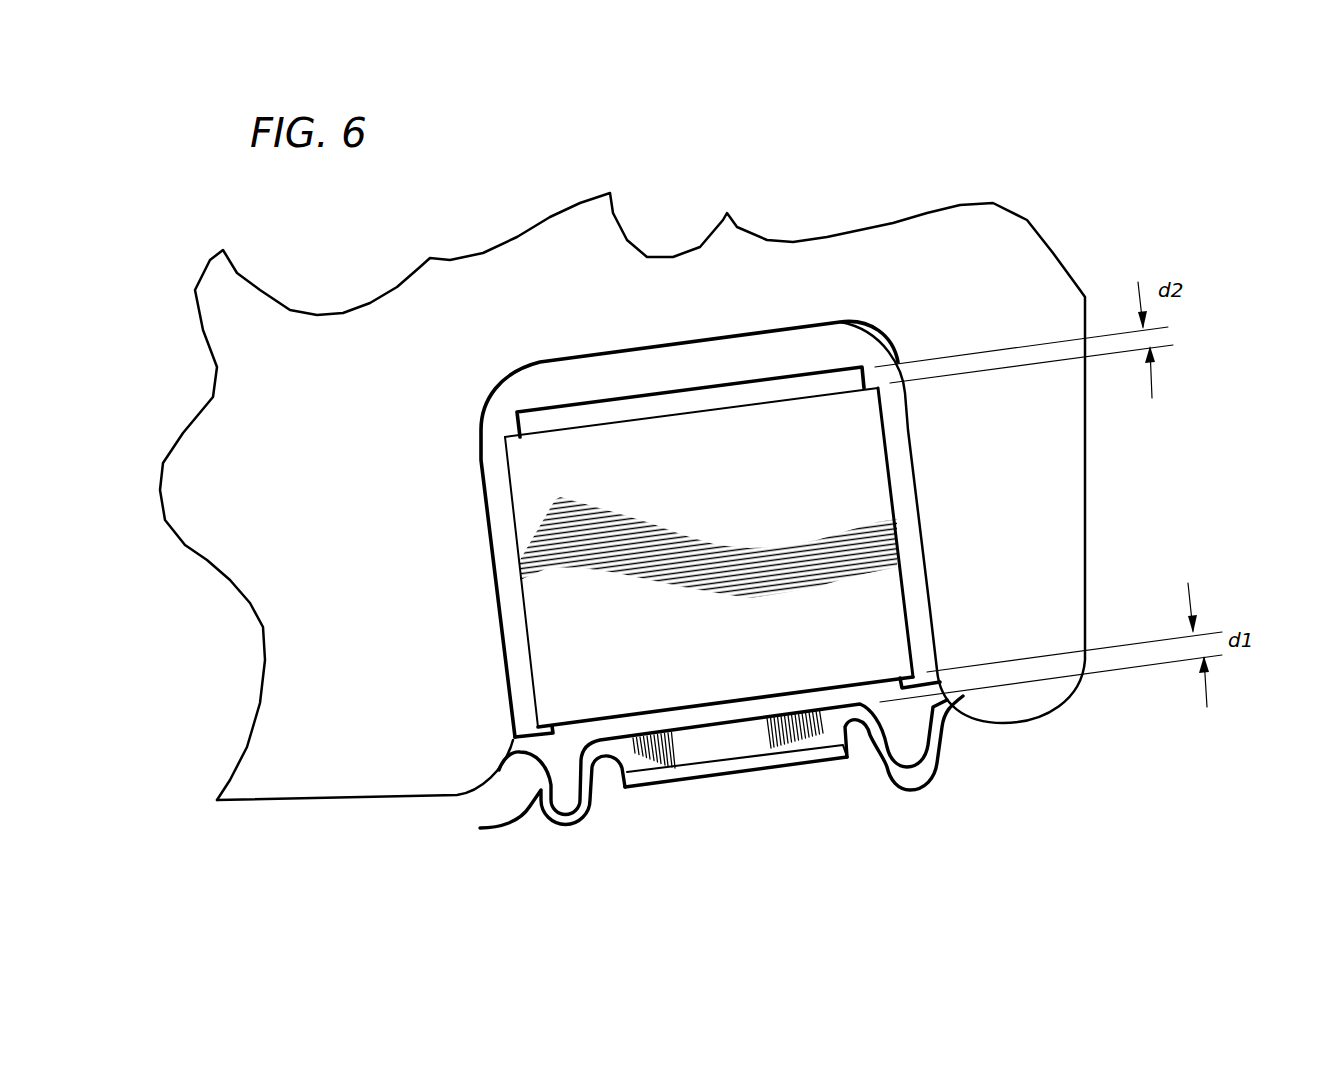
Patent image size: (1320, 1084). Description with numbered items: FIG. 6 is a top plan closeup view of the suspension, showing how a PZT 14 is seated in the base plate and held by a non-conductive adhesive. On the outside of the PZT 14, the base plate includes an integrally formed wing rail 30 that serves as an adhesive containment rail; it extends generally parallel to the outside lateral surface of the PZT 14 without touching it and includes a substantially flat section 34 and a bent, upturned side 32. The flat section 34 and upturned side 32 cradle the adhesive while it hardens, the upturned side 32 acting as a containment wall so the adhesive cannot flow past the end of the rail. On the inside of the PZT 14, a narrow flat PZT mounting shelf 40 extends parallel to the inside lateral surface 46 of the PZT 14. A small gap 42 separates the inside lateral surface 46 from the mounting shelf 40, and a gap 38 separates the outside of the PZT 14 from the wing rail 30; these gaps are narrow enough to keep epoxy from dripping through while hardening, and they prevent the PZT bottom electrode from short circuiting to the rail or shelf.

The PZT 14 is at (553, 622).
The wing rail 30 is at (657, 796).
The upturned side 32 is at (735, 763).
The flat section 34 is at (801, 723).
The gap 38 is at (500, 827).
The PZT mounting shelf 40 is at (665, 360).
The gap 42 is at (637, 407).
The inside lateral surface 46 is at (573, 427).